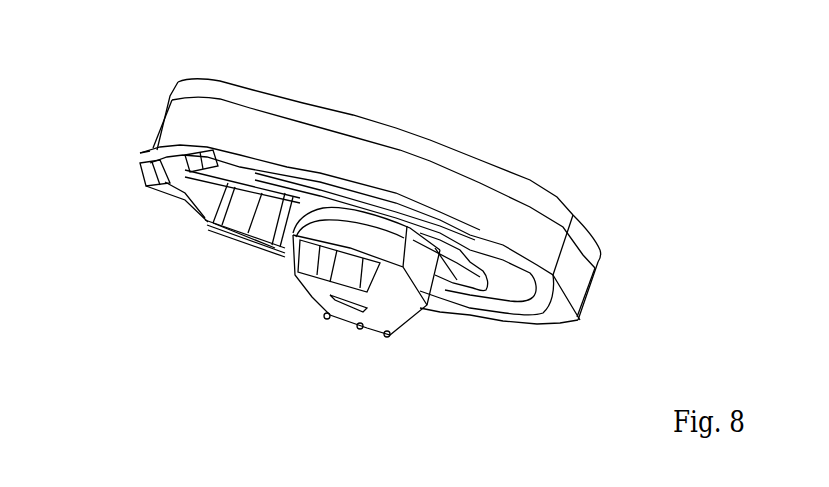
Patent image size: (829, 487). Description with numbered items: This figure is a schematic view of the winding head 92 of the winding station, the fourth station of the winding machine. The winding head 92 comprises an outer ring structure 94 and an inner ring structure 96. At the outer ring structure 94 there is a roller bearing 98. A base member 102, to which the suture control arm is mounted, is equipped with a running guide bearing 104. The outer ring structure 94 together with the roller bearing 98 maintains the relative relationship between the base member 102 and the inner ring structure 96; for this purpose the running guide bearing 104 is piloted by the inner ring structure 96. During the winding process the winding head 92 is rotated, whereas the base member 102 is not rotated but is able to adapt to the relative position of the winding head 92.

The winding head 92 is at (623, 98).
The outer ring structure 94 is at (140, 153).
The inner ring structure 96 is at (482, 265).
The roller bearing 98 is at (143, 187).
The base member 102 is at (262, 206).
The running guide bearing 104 is at (235, 169).